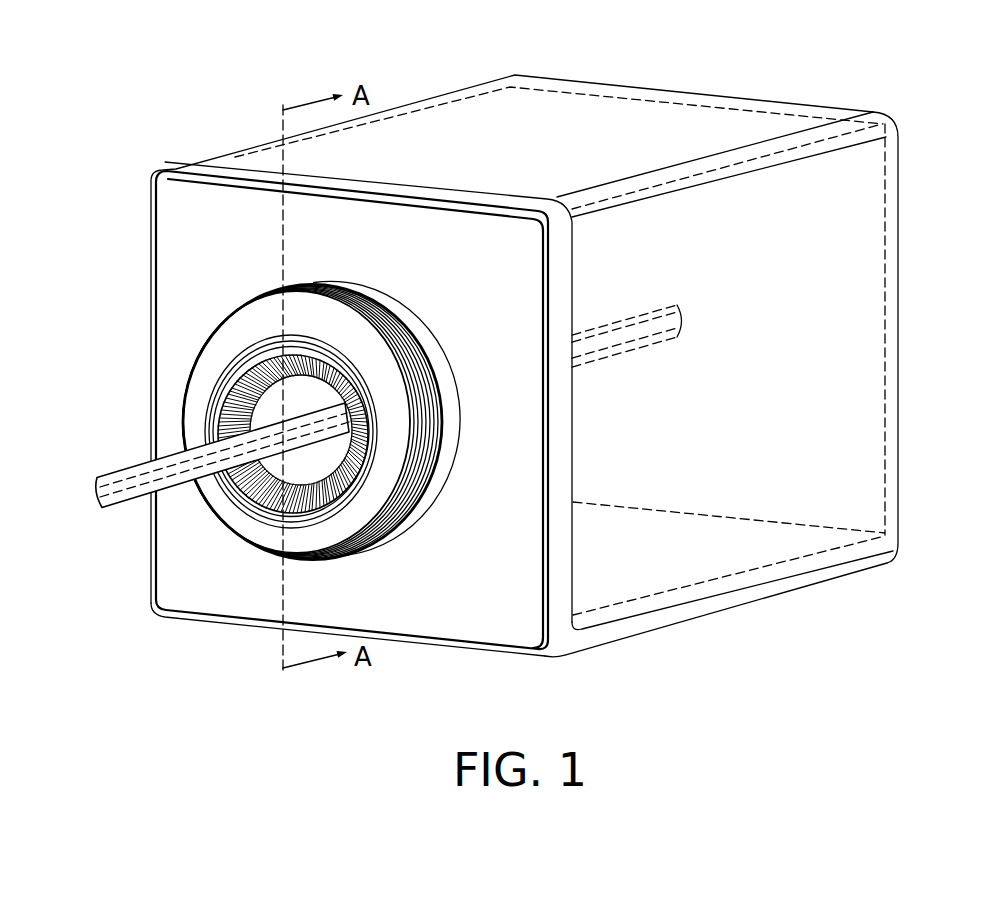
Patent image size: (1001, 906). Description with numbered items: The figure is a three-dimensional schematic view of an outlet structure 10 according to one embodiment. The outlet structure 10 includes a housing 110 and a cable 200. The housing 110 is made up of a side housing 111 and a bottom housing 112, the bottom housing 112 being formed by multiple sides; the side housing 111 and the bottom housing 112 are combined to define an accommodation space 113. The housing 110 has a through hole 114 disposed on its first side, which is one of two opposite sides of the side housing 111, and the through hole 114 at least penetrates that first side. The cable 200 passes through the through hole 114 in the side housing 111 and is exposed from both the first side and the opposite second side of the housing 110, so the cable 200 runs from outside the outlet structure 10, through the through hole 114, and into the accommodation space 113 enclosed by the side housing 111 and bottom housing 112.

The outlet structure 10 is at (952, 58).
The housing 110 is at (110, 102).
The side housing 111 is at (182, 161).
The bottom housing 112 is at (230, 148).
The accommodation space 113 is at (891, 233).
The through hole 114 is at (330, 393).
The cable 200 is at (98, 462).